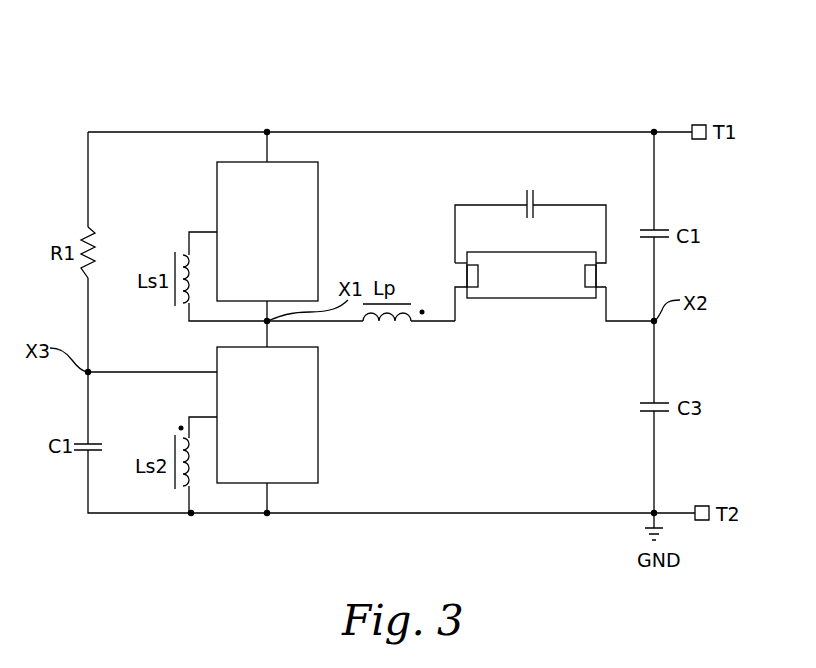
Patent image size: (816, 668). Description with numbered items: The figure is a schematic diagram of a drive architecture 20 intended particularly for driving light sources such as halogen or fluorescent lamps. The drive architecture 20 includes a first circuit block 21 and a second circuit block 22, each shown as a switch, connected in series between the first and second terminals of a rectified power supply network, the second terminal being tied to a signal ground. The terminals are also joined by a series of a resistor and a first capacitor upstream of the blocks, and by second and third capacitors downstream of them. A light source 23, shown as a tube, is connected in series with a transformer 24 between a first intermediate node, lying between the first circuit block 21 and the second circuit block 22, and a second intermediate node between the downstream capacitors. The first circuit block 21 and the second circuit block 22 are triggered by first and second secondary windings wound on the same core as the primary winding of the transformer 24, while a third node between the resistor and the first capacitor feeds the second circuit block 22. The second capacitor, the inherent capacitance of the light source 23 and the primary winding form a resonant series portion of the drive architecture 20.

The drive architecture 20 is at (631, 97).
The first circuit block 21 is at (318, 190).
The second circuit block 22 is at (318, 373).
The light source 23 is at (530, 298).
The transformer 24 is at (390, 323).